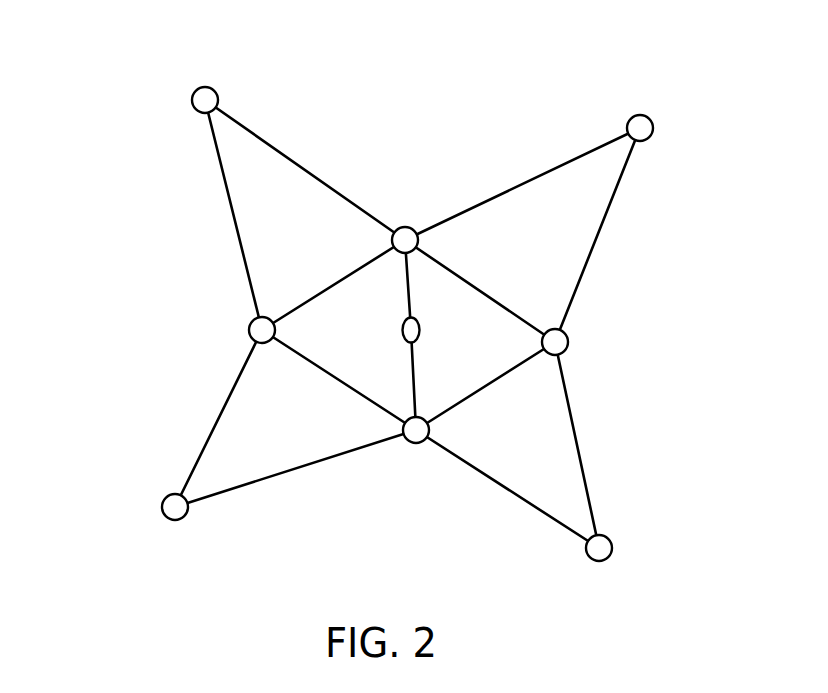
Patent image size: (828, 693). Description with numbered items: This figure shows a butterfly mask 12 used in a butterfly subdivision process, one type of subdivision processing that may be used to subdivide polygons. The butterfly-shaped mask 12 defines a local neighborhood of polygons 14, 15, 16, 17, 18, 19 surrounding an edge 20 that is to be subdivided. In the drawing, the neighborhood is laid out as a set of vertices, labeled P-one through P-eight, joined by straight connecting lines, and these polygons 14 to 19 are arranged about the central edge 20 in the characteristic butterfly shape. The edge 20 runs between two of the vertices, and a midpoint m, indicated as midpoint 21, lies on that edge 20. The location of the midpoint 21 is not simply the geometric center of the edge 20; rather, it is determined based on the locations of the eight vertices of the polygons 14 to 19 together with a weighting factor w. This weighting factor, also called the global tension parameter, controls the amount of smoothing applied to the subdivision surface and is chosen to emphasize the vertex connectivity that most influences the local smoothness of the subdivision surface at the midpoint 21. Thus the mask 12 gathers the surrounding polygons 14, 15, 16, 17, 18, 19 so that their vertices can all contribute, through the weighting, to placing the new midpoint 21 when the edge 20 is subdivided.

The butterfly-shaped mask 12 is at (357, 305).
The polygon 14 is at (295, 197).
The polygon 15 is at (260, 470).
The polygon 16 is at (327, 353).
The polygon 17 is at (521, 350).
The polygon 18 is at (580, 235).
The polygon 19 is at (530, 488).
The edge 20 is at (420, 380).
The midpoint 21 is at (440, 300).